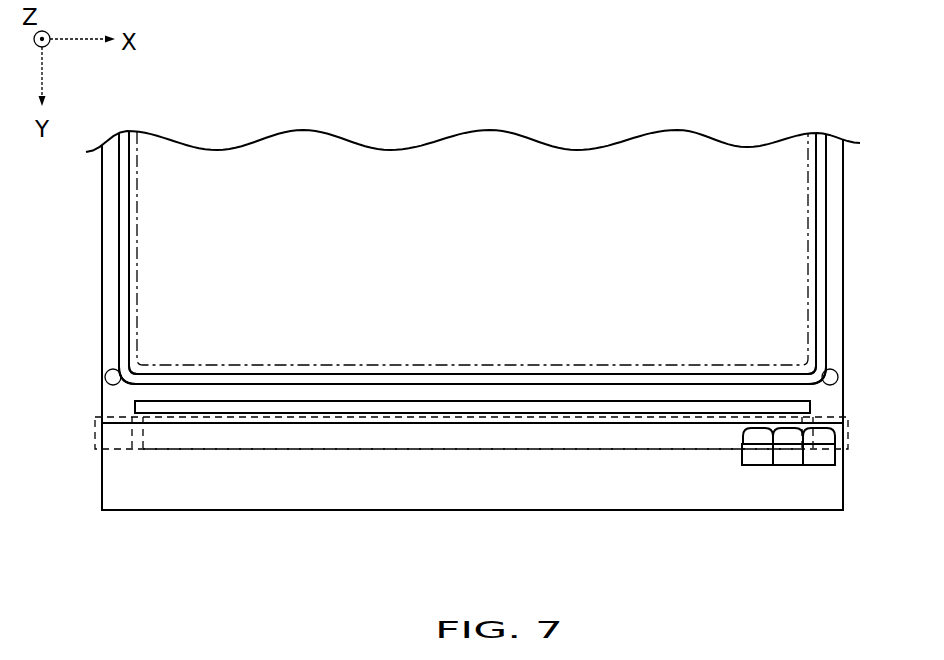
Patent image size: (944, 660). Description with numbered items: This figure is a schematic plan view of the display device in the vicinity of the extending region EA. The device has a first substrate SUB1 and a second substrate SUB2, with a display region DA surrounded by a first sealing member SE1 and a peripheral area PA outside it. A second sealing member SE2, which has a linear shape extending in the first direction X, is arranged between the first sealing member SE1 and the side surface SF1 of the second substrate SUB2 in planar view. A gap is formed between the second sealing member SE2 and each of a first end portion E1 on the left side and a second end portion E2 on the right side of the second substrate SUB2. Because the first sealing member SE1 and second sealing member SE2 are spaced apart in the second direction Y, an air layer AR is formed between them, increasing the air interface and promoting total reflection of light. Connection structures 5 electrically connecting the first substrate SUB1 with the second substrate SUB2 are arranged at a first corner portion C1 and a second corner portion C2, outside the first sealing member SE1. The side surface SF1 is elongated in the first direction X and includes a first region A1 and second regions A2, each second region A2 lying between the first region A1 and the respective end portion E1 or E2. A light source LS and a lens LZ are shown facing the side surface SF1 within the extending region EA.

The first substrate SUB1 is at (162, 510).
The second substrate SUB2 is at (267, 423).
The side surface SF1 is at (333, 424).
The first sealing member SE1 is at (119, 292).
The second sealing member SE2 is at (372, 400).
The peripheral area PA is at (110, 253).
The display region DA is at (137, 193).
The first region A1 is at (453, 448).
The second region A2 is at (95, 432).
The connection structure 5 is at (106, 371).
The first end portion E1 is at (97, 395).
The second end portion E2 is at (848, 395).
The first corner portion C1 is at (153, 352).
The second corner portion C2 is at (787, 350).
The air layer AR is at (592, 390).
The extending region EA is at (603, 480).
The light source LS is at (819, 465).
The lens LZ is at (763, 465).